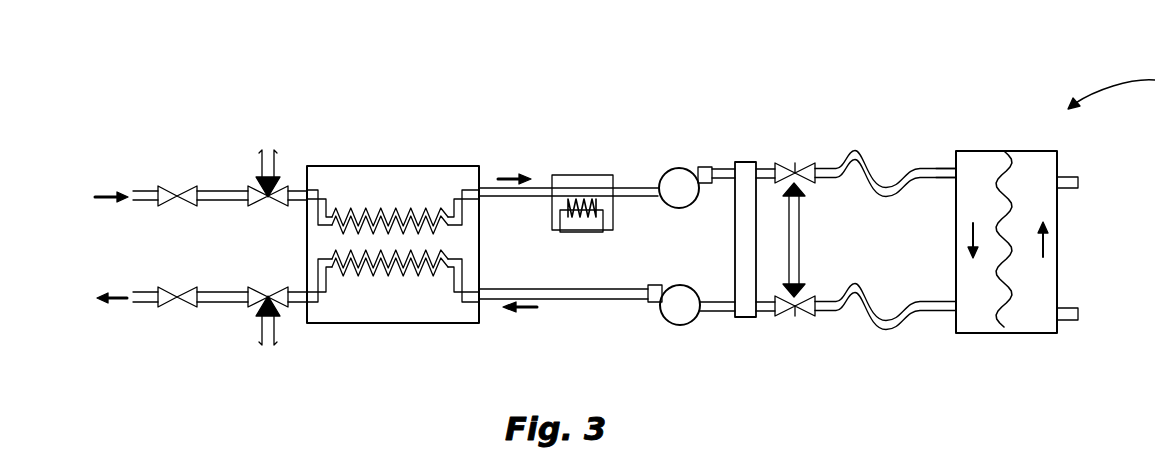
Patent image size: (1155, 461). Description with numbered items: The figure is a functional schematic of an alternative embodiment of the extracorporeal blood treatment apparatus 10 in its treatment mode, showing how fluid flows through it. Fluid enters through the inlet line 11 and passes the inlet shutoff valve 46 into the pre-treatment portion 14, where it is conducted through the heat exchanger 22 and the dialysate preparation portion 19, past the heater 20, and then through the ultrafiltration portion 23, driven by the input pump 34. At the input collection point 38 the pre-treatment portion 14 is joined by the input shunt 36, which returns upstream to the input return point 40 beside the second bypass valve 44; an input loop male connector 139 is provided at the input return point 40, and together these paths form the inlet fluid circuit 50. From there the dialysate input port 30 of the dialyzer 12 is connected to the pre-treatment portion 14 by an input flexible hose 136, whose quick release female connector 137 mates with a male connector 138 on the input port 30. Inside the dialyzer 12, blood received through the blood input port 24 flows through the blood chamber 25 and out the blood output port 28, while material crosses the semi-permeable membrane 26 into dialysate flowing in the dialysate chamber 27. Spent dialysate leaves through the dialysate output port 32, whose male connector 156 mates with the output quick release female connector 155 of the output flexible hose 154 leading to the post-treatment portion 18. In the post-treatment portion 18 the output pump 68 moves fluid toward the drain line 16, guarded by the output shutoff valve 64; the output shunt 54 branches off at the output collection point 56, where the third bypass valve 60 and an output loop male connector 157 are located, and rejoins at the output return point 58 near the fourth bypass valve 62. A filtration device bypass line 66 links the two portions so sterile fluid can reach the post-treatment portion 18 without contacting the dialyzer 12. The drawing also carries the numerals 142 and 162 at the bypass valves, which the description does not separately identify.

The apparatus 10 is at (858, 460).
The inlet line 11 is at (132, 191).
The dialyzer 12 is at (1037, 152).
The pre-treatment portion 14 is at (538, 187).
The drain line 16 is at (132, 297).
The post-treatment portion 18 is at (565, 288).
The dialysate preparation portion 19 is at (618, 207).
The heater 20 is at (560, 203).
The heat exchanger 22 is at (418, 323).
The ultrafiltration portion 23 is at (734, 242).
The blood input port 24 is at (1060, 308).
The blood chamber 25 is at (1059, 333).
The semi-permeable membrane 26 is at (1038, 307).
The dialysate chamber 27 is at (982, 320).
The blood output port 28 is at (1060, 188).
The dialysate input port 30 is at (933, 167).
The dialysate output port 32 is at (948, 312).
The input pump 34 is at (682, 167).
The input shunt 36 is at (657, 137).
The input collection point 38 is at (787, 163).
The input return point 40 is at (262, 168).
The second bypass valve 44 is at (258, 187).
The inlet shutoff valve 46 is at (192, 188).
The inlet fluid circuit 50 is at (725, 460).
The output shunt 54 is at (608, 370).
The output collection point 56 is at (273, 303).
The output return point 58 is at (782, 317).
The third bypass valve 60 is at (255, 305).
The fourth bypass valve 62 is at (960, 418).
The output shutoff valve 64 is at (190, 305).
The filtration device bypass line 66 is at (802, 243).
The output pump 68 is at (672, 323).
The input flexible hose 136 is at (860, 152).
The quick release female connector 137 is at (922, 164).
The male connector 138 is at (930, 186).
The input loop male connector 139 is at (276, 150).
The valve stem 142 is at (795, 163).
The output flexible hose 154 is at (836, 290).
The output quick release female connector 155 is at (924, 299).
The male connector 156 is at (936, 316).
The output loop male connector 157 is at (273, 345).
The valve stem 162 is at (812, 317).